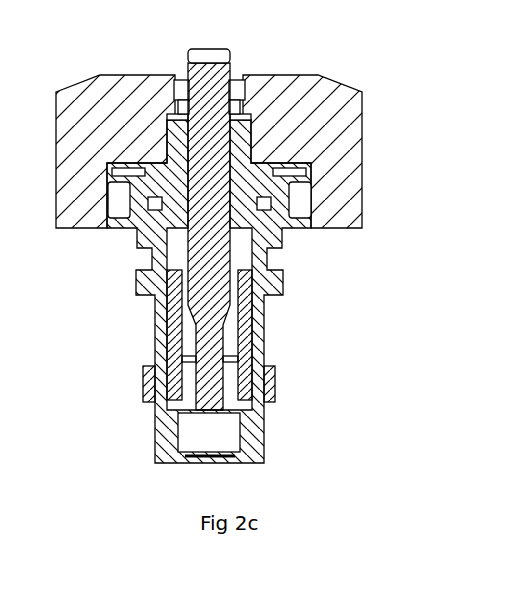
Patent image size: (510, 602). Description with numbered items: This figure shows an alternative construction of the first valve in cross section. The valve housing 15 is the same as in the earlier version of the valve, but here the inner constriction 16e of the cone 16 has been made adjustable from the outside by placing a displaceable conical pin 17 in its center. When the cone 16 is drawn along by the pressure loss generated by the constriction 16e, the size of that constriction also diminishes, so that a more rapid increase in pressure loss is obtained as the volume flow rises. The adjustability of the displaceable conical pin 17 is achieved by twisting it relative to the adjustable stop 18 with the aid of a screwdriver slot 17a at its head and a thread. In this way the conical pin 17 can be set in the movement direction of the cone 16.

The adjustable stop 18 is at (282, 110).
The valve housing 15 is at (288, 207).
The cone 16 is at (253, 385).
The inner constriction 16e is at (157, 362).
The displaceable conical pin 17 is at (215, 340).
The screwdriver slot 17a is at (210, 52).